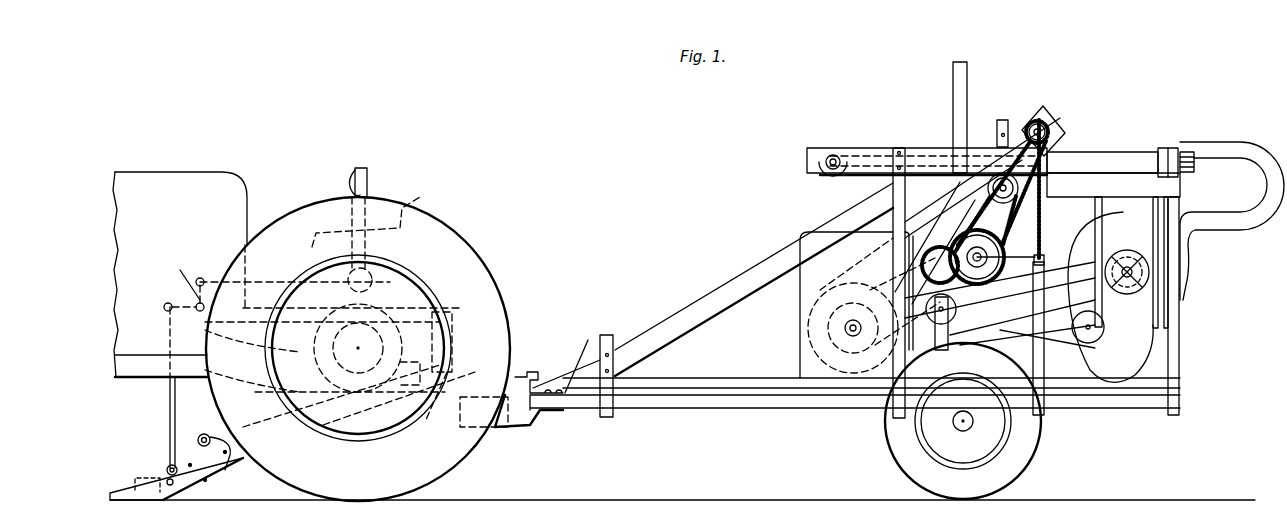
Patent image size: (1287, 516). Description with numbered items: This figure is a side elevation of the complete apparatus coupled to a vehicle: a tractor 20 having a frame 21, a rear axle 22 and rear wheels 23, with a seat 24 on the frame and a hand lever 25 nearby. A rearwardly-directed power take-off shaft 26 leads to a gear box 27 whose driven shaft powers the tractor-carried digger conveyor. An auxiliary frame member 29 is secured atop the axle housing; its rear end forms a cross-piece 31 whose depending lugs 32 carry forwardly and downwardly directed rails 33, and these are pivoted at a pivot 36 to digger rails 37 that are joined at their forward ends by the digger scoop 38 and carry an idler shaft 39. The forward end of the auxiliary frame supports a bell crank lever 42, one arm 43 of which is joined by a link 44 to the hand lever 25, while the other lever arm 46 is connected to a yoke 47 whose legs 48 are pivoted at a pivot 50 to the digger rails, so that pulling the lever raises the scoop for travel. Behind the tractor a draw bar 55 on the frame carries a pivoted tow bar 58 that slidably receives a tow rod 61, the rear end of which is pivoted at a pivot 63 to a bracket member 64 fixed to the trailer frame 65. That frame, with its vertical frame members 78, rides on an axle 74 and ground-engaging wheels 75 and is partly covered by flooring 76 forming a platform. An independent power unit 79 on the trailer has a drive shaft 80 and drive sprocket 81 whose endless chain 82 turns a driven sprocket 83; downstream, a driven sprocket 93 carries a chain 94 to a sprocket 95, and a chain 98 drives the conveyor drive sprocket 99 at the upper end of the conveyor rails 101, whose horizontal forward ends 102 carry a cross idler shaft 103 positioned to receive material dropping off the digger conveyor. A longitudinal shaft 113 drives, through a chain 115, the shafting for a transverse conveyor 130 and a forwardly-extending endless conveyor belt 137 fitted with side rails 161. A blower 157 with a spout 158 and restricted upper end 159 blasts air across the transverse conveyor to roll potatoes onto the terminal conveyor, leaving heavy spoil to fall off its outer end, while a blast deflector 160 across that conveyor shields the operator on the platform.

The tractor 20 is at (183, 165).
The frame 21 is at (132, 362).
The rear axle 22 is at (333, 352).
The rear wheels 23 is at (440, 468).
The seat 24 is at (396, 210).
The hand lever 25 is at (368, 170).
The power take-off shaft 26 is at (423, 323).
The gear box 27 is at (470, 370).
The auxiliary frame member 29 is at (400, 307).
The cross-piece 31 is at (440, 310).
The depending lugs 32 is at (440, 345).
The rail 33 is at (247, 462).
The pivot 36 is at (204, 434).
The digger rail 37 is at (152, 458).
The digger scoop 38 is at (140, 480).
The idler shaft 39 is at (180, 485).
The bell crank lever 42 is at (179, 278).
The arm 43 is at (205, 285).
The link 44 is at (273, 287).
The lever arm 46 is at (206, 331).
The yoke 47 is at (167, 294).
The legs 48 is at (170, 416).
The pivot 50 is at (170, 467).
The draw bar 55 is at (359, 396).
The tow bar 58 is at (436, 410).
The tow rod 61 is at (516, 372).
The pivot 63 is at (528, 378).
The bracket member 64 is at (580, 354).
The frame 65 is at (687, 413).
The axle 74 is at (972, 426).
The ground-engaging wheels 75 is at (888, 433).
The flooring 76 is at (705, 378).
The vertical frame members 78 is at (612, 335).
The power unit 79 is at (802, 233).
The drive shaft 80 is at (815, 338).
The drive sprocket 81 is at (810, 320).
The endless chain 82 is at (948, 250).
The driven sprocket 83 is at (977, 262).
The driven sprocket 93 is at (977, 211).
The chain 94 is at (1052, 202).
The sprocket 95 is at (988, 196).
The chain 98 is at (1003, 120).
The conveyor drive sprocket 99 is at (1052, 128).
The conveyor rails 101 is at (720, 295).
The forward ends 102 is at (500, 428).
The cross idler shaft 103 is at (540, 426).
The shaft 113 is at (1048, 262).
The chain 115 is at (1046, 224).
The transverse conveyor 130 is at (1108, 152).
The endless conveyor belt 137 is at (917, 150).
The blower 157 is at (1190, 277).
The spout 158 is at (1205, 218).
The upper end 159 is at (1165, 148).
The blast deflector 160 is at (953, 70).
The side rails 161 is at (855, 150).